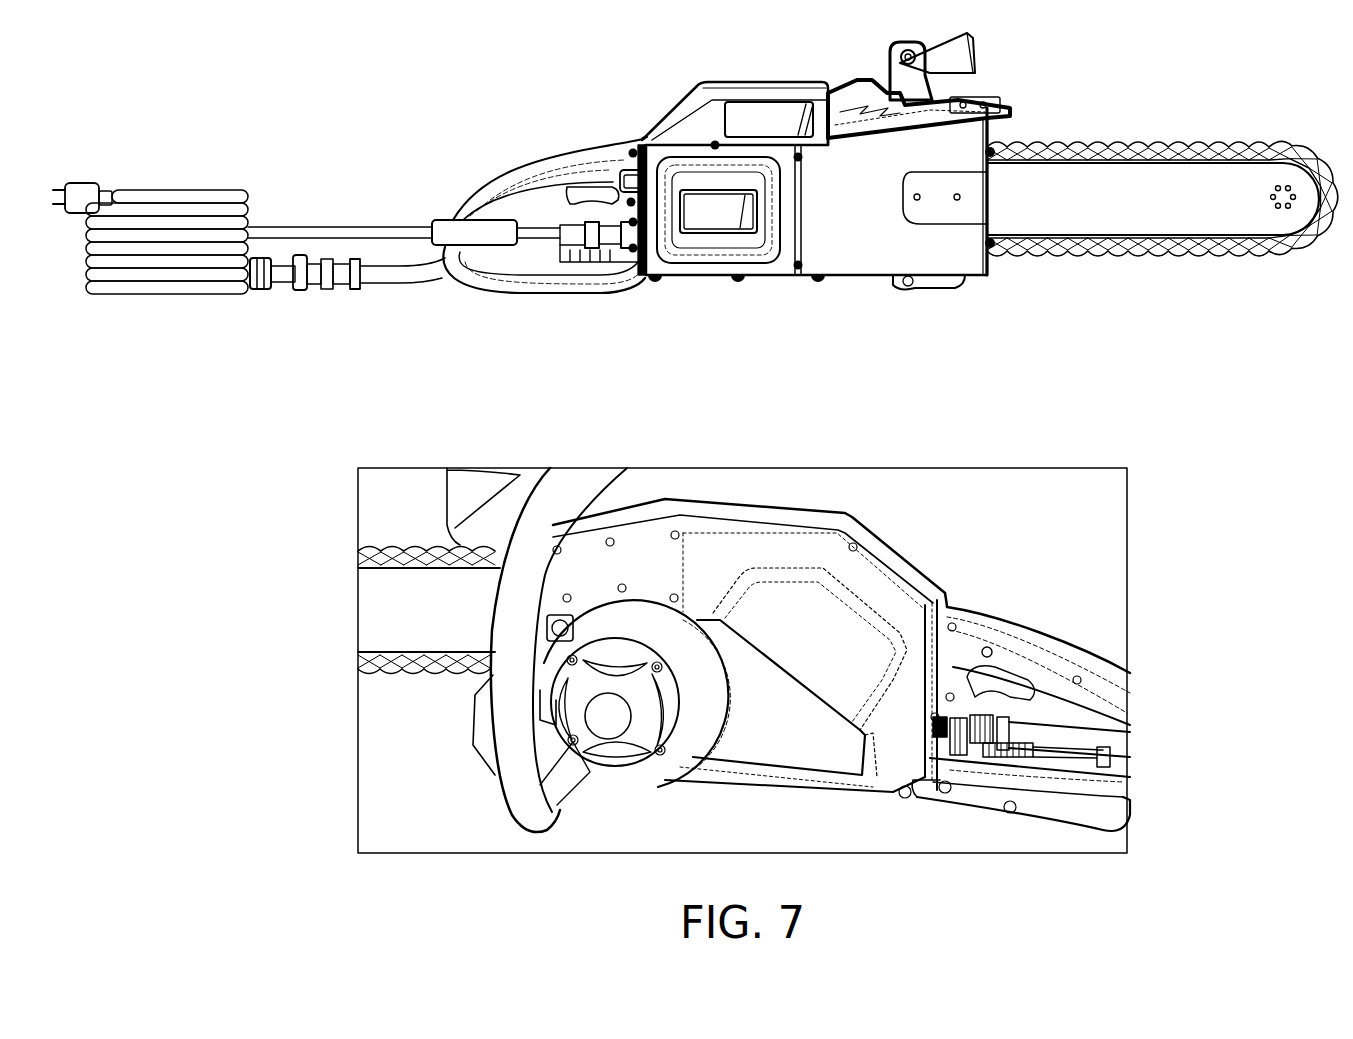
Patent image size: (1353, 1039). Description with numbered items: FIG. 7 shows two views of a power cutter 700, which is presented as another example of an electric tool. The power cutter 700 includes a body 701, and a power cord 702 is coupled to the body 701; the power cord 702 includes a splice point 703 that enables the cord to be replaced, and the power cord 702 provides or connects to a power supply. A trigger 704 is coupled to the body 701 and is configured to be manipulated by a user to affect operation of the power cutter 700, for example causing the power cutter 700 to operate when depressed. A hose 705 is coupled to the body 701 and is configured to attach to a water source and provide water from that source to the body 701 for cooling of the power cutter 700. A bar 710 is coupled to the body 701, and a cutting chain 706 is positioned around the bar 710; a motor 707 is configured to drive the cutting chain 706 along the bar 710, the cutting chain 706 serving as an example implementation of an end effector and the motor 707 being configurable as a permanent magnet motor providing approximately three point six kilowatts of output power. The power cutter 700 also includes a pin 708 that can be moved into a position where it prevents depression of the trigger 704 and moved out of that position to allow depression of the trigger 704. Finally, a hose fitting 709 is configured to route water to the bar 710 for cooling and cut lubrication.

The power cutter 700 is at (559, 63).
The body 701 is at (770, 92).
The power cord 702 is at (183, 192).
The splice point 703 is at (487, 228).
The trigger 704 is at (590, 190).
The hose 705 is at (281, 292).
The cutting chain 706 is at (1231, 150).
The motor 707 is at (695, 697).
The pin 708 is at (988, 648).
The hose fitting 709 is at (548, 652).
The bar 710 is at (1105, 185).